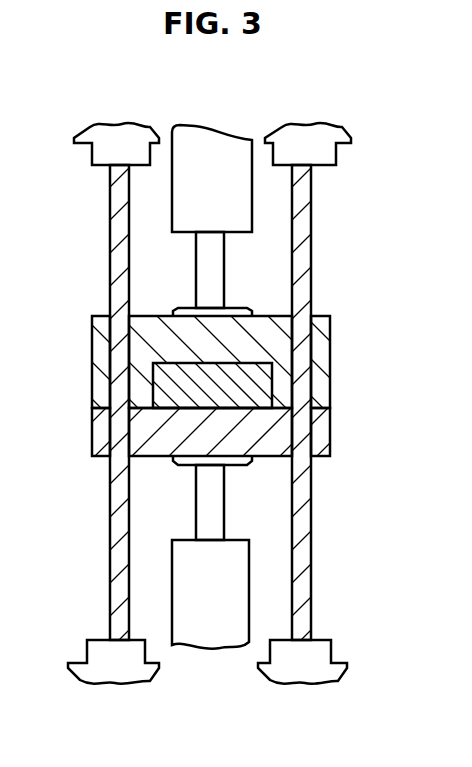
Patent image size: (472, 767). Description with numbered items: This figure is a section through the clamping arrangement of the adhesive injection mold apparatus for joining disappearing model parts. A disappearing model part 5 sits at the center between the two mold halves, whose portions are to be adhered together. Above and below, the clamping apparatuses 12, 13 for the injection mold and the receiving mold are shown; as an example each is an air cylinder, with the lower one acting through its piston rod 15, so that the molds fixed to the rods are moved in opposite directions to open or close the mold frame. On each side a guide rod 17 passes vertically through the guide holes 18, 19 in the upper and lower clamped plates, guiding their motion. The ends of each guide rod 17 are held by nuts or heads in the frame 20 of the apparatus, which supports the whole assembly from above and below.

The disappearing model part 5 is at (272, 382).
The clamping apparatus 12 is at (228, 137).
The clamping apparatus 13 is at (246, 592).
The piston rod 15 is at (225, 507).
The guide rod 17 is at (110, 260).
The guide hole 18 is at (112, 347).
The guide hole 19 is at (117, 438).
The frame 20 is at (338, 150).